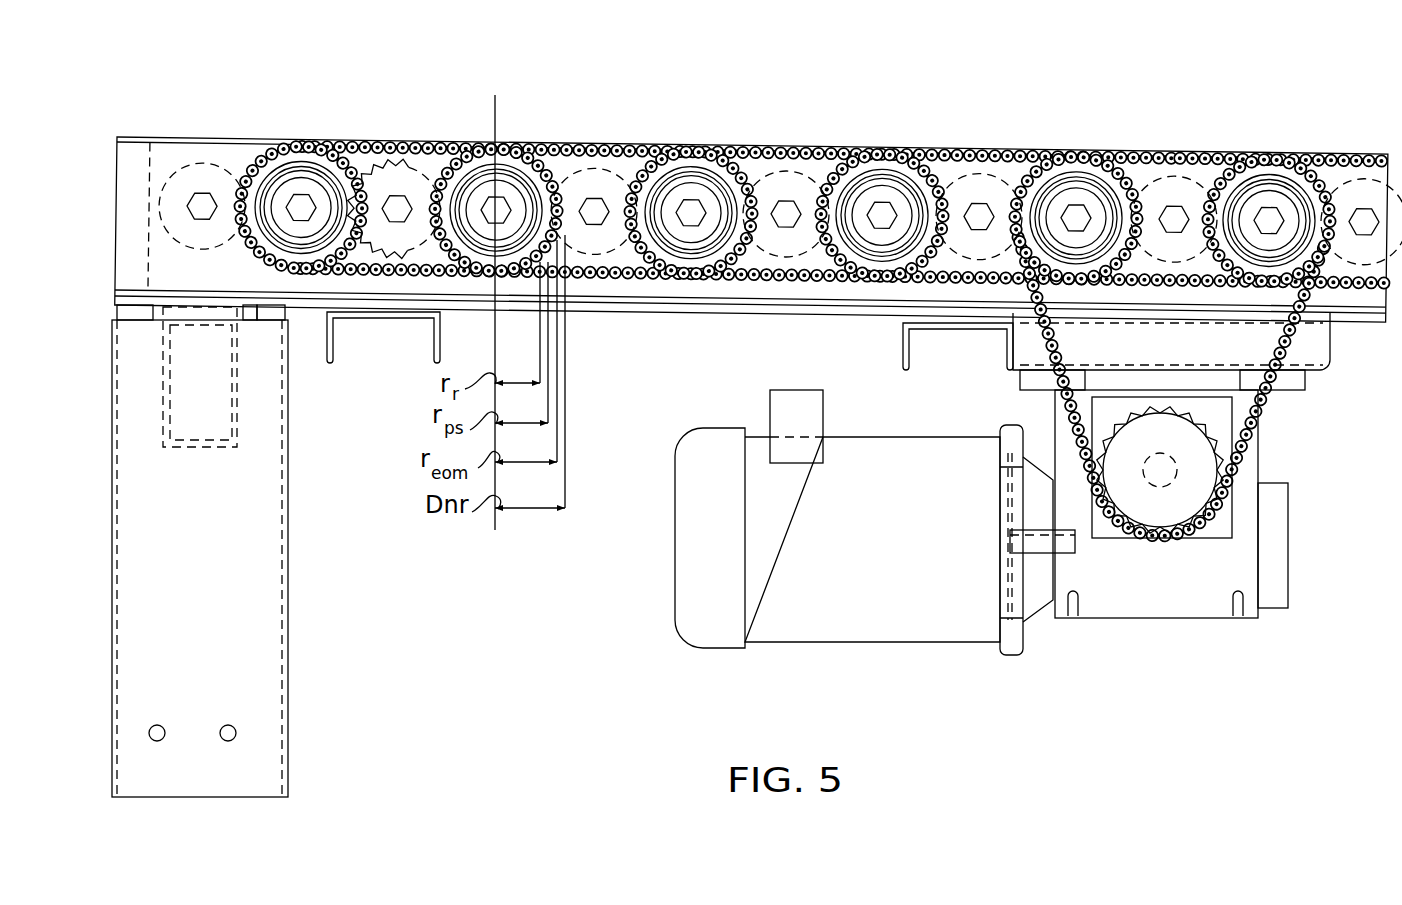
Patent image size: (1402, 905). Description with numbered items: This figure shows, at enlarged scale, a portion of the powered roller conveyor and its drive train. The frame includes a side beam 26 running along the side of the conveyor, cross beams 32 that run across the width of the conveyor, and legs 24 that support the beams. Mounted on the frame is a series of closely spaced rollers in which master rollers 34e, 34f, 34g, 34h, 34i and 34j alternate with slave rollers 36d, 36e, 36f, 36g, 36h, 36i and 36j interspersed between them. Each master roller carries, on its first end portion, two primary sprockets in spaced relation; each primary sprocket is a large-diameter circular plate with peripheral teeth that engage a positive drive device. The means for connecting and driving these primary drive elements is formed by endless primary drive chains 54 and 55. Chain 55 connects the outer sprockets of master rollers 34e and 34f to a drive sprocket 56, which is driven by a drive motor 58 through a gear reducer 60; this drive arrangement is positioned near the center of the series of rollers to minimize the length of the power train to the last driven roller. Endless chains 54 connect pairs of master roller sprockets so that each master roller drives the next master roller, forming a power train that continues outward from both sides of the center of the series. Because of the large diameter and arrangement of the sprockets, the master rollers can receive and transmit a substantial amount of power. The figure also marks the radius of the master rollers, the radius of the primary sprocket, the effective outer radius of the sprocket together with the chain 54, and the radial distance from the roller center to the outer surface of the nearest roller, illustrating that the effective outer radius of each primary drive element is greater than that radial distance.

The legs 24 is at (240, 675).
The side beam 26 is at (137, 242).
The cross beams 32 is at (430, 330).
The master roller 34e is at (1265, 203).
The master roller 34f is at (1075, 203).
The master roller 34g is at (883, 190).
The master roller 34h is at (683, 190).
The master roller 34i is at (490, 187).
The master roller 34j is at (285, 187).
The slave roller 36d is at (1355, 193).
The slave roller 36e is at (1175, 193).
The slave roller 36f is at (982, 173).
The slave roller 36g is at (787, 173).
The slave roller 36h is at (598, 173).
The slave roller 36i is at (382, 197).
The slave roller 36j is at (200, 175).
The primary drive chains 54 is at (437, 138).
The primary drive chain 55 is at (1210, 150).
The drive sprocket 56 is at (1193, 490).
The drive motor 58 is at (877, 572).
The gear reducer 60 is at (1172, 597).